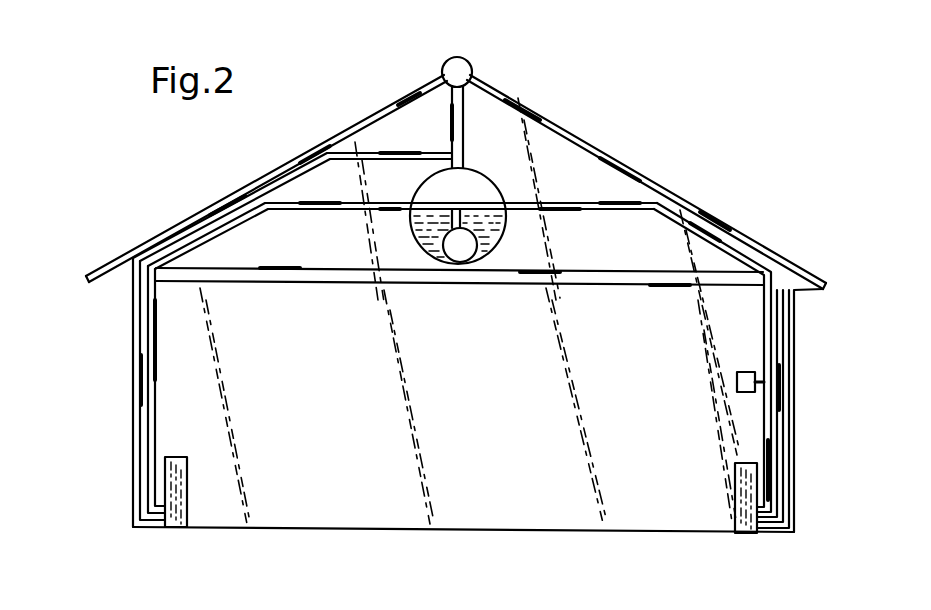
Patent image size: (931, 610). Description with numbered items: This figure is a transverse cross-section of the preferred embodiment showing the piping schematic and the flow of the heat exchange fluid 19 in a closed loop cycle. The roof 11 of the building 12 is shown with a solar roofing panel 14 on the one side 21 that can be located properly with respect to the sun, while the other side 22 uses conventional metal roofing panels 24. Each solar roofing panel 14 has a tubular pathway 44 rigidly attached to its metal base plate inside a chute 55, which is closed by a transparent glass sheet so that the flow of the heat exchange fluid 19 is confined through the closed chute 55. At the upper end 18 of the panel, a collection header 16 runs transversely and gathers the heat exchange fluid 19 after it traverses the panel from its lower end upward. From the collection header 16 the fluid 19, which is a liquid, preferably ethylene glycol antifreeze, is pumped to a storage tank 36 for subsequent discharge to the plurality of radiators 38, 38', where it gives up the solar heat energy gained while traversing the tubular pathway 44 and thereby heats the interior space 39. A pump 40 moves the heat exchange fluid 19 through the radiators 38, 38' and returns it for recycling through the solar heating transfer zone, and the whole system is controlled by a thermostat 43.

The roof 11 is at (587, 140).
The building 12 is at (793, 388).
The solar roofing panel 14 is at (613, 163).
The collection header 16 is at (463, 59).
The upper end 18 is at (473, 72).
The heat exchange fluid 19 is at (412, 222).
The one side of the roof 21 is at (552, 105).
The other side of the roof 22 is at (370, 98).
The conventional metal roofing panels 24 is at (337, 140).
The storage tank 36 is at (458, 177).
The radiator 38 is at (123, 492).
The radiator 38' is at (795, 498).
The interior space 39 is at (470, 512).
The pump 40 is at (477, 243).
The thermostat 43 is at (737, 383).
The tubular pathway 44 is at (140, 330).
The chute 55 is at (670, 197).